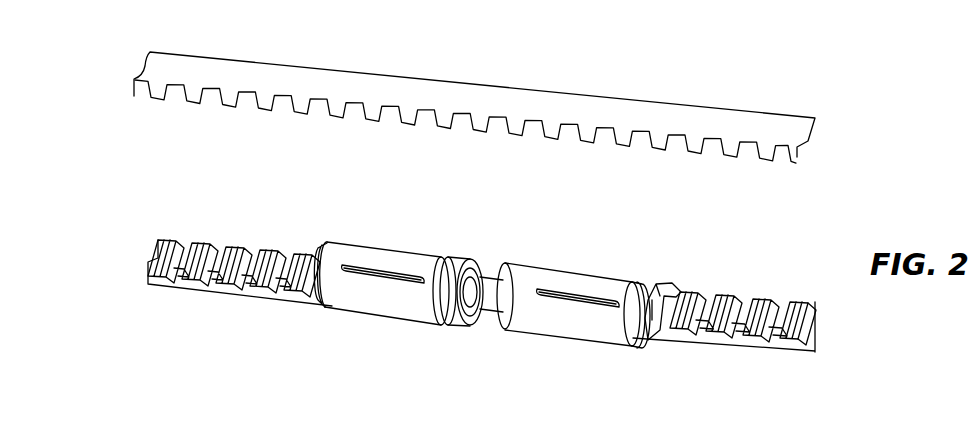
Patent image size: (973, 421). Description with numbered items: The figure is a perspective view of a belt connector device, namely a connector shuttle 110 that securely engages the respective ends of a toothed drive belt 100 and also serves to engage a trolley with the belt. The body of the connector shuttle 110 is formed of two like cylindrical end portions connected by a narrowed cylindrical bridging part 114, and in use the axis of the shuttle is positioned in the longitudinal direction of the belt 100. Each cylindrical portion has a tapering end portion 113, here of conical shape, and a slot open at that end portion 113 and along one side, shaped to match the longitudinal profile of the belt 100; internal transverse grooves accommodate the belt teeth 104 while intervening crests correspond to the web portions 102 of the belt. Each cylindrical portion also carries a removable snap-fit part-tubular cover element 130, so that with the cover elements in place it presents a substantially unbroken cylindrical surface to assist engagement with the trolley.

The drive belt 100 is at (224, 125).
The web portions 102 is at (724, 311).
The belt teeth 104 is at (727, 308).
The connector shuttle 110 is at (504, 287).
The tapering end portion 113 is at (305, 250).
The narrowed cylindrical bridging part 114 is at (486, 298).
The cover element 130 is at (553, 266).